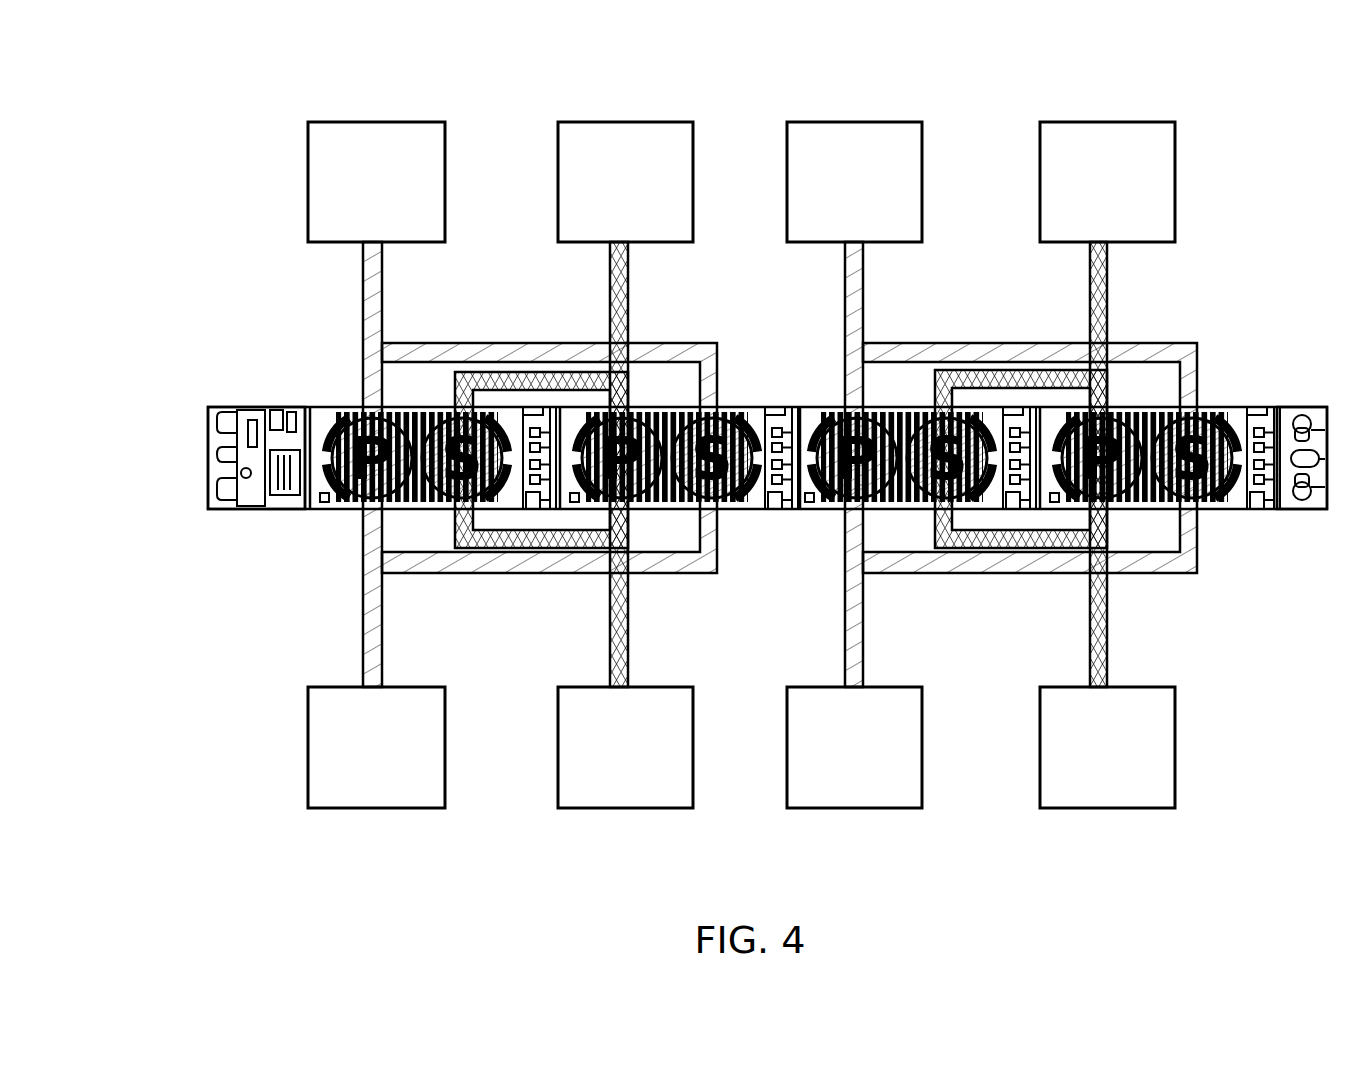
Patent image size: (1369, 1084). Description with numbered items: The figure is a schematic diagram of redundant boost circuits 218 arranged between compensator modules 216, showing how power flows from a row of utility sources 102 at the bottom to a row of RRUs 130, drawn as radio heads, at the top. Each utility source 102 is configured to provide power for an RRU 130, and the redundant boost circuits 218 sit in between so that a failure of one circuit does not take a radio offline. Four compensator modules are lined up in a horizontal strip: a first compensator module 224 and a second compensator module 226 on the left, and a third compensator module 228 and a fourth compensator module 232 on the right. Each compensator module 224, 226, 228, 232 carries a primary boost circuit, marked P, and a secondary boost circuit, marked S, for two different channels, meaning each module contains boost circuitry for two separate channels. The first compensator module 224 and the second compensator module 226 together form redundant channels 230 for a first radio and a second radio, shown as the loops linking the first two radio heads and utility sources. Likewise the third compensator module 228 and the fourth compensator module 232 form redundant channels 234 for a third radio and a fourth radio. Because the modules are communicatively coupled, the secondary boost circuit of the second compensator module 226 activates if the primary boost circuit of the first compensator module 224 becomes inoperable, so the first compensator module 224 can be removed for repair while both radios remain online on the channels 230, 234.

The redundant boost circuits 218 is at (188, 98).
The RRU 130 is at (1105, 122).
The utility source 102 is at (1105, 808).
The first compensator module 224 is at (225, 512).
The fourth compensator module 232 is at (1250, 512).
The compensator module 216 is at (800, 405).
The second compensator module 226 is at (757, 512).
The third compensator module 228 is at (898, 406).
The redundant channels 230 is at (486, 575).
The redundant channels 234 is at (1137, 343).